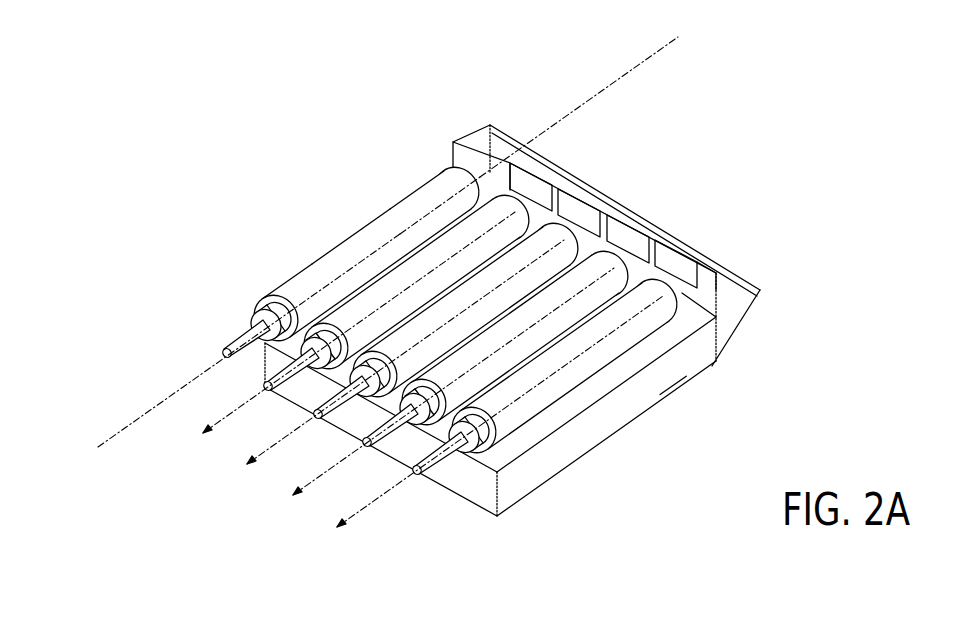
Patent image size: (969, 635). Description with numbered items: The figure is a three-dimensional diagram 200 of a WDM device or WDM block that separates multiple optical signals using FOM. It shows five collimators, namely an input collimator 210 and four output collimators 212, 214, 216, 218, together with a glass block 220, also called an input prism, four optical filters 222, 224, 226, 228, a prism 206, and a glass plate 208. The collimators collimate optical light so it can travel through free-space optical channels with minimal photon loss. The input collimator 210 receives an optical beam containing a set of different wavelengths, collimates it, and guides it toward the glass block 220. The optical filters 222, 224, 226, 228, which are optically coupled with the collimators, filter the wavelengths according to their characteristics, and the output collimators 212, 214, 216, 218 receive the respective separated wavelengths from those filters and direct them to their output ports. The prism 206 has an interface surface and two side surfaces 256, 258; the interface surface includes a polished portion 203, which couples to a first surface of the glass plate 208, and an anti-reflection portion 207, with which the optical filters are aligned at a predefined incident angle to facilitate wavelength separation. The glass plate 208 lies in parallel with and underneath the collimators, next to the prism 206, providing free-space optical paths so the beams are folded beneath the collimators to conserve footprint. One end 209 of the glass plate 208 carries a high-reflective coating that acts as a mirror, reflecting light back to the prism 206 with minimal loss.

The diagram 200 is at (453, 296).
The polished portion 203 is at (723, 325).
The prism 206 is at (740, 303).
The anti-reflection portion 207 is at (724, 290).
The glass plate 208 is at (490, 394).
The end of glass plate 209 is at (500, 479).
The input collimator 210 is at (354, 259).
The output collimator 212 is at (350, 243).
The output collimator 214 is at (436, 199).
The output collimator 216 is at (570, 388).
The output collimator 218 is at (616, 407).
The glass block 220 is at (621, 243).
The optical filter 222 is at (531, 187).
The optical filter 224 is at (579, 213).
The optical filter 226 is at (628, 239).
The optical filter 228 is at (676, 264).
The side surface 256 is at (733, 282).
The side surface 258 is at (738, 332).